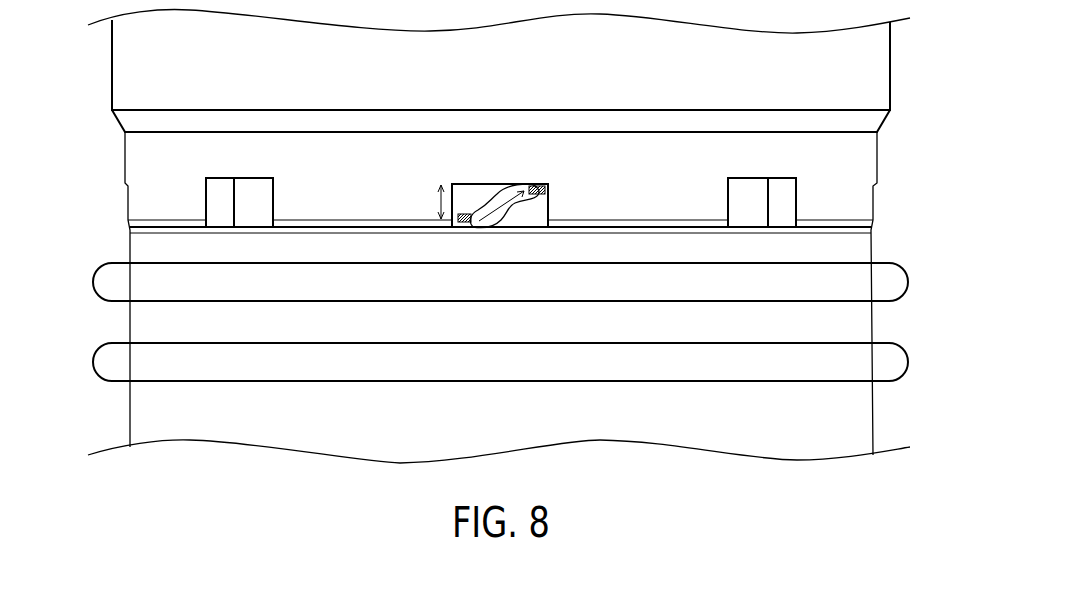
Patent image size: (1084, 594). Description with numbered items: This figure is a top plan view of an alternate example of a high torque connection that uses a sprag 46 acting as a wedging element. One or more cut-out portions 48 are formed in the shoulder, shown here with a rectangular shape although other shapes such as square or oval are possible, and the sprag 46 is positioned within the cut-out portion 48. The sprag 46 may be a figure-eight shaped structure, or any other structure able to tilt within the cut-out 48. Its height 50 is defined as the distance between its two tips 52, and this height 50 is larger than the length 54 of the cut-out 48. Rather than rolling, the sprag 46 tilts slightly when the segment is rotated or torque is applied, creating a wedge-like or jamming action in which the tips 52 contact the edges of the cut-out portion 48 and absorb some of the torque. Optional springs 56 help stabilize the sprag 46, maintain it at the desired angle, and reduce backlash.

The sprag 46 is at (492, 203).
The cut-out portion 48 is at (256, 178).
The height 50 is at (523, 207).
The tips 52 is at (514, 193).
The length 54 is at (438, 205).
The springs 56 is at (535, 186).